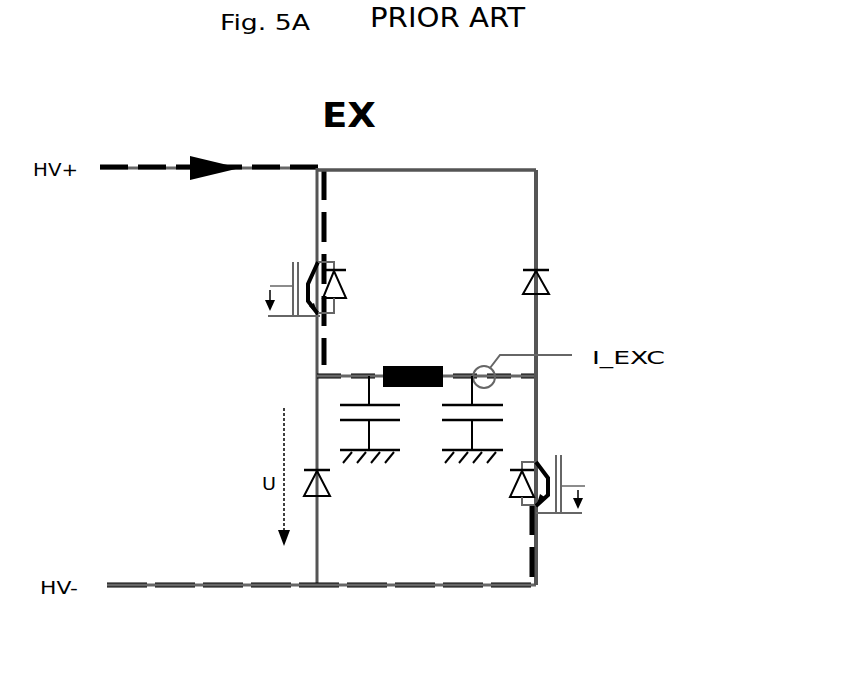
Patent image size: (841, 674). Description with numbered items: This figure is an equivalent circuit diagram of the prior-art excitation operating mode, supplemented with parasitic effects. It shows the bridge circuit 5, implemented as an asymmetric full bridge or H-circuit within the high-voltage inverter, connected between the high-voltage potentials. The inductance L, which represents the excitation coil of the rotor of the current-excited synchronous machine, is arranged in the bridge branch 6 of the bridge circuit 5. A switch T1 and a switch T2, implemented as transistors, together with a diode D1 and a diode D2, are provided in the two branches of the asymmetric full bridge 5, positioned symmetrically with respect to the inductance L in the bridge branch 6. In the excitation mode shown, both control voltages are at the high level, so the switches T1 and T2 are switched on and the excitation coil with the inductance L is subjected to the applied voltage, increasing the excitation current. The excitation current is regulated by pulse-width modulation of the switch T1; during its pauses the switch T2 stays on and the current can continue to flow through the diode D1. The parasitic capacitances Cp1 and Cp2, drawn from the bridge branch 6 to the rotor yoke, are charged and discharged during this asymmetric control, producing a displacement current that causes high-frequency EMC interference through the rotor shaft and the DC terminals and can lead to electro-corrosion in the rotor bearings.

The bridge circuit 5 is at (520, 273).
The bridge branch 6 is at (524, 326).
The diode D1 is at (330, 497).
The diode D2 is at (514, 285).
The switch T1 is at (241, 292).
The switch T2 is at (620, 486).
The inductance L is at (413, 361).
The parasitic capacitance Cp1 is at (370, 432).
The parasitic capacitance Cp2 is at (472, 432).